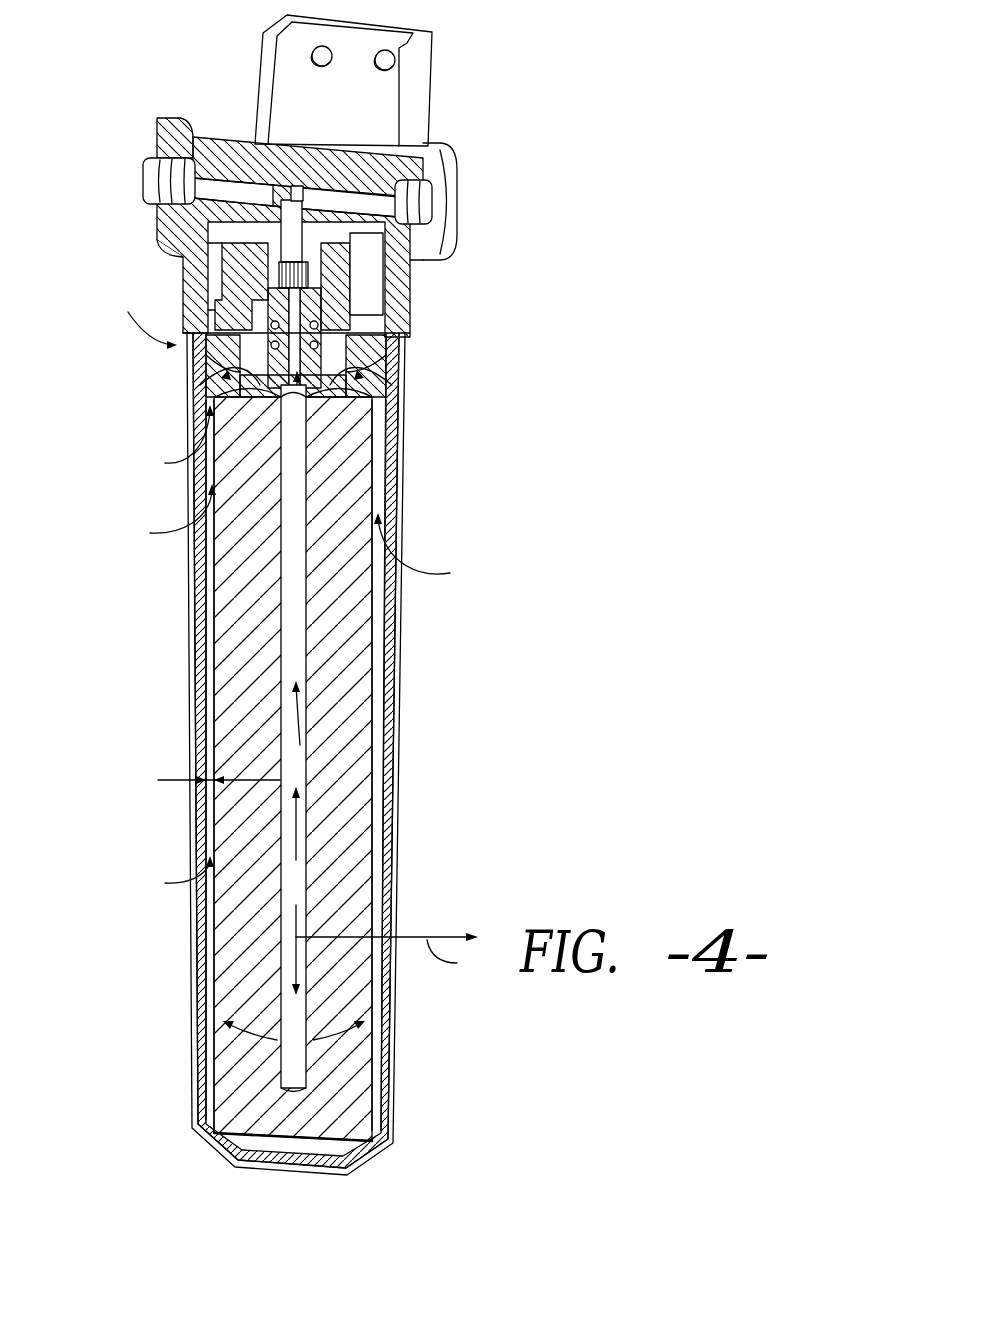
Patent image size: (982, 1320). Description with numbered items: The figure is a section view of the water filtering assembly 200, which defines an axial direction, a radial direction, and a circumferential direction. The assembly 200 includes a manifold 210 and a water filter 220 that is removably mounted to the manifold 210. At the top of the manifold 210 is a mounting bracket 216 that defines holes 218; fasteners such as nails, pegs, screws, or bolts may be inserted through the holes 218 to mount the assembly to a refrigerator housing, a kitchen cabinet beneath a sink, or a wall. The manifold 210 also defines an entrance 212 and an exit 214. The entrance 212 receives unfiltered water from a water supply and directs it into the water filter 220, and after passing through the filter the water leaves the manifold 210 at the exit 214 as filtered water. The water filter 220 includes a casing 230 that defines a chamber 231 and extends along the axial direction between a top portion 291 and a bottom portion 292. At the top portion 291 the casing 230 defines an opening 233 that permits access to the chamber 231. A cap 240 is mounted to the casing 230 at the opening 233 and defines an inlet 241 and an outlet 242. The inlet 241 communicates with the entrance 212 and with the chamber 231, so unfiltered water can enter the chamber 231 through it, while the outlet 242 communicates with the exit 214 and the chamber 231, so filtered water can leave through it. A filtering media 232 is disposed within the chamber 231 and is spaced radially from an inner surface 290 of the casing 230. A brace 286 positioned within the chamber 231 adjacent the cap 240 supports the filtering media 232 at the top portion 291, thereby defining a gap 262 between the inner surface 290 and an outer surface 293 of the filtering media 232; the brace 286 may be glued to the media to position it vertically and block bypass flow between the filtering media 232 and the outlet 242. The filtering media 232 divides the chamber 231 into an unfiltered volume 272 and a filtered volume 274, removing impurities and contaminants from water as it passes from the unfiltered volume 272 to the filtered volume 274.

The water filtering assembly 200 is at (395, 588).
The manifold 210 is at (411, 297).
The entrance 212 is at (210, 188).
The exit 214 is at (378, 201).
The mounting bracket 216 is at (374, 73).
The holes 218 is at (332, 42).
The water filter 220 is at (401, 858).
The casing 230 is at (195, 600).
The chamber 231 is at (164, 877).
The filtering media 232 is at (238, 925).
The opening 233 is at (422, 345).
The cap 240 is at (207, 352).
The inlet 241 is at (228, 372).
The outlet 242 is at (320, 445).
The gap 262 is at (170, 782).
The unfiltered volume 272 is at (298, 535).
The filtered volume 274 is at (308, 740).
The brace 286 is at (163, 442).
The inner surface 290 is at (212, 638).
The top portion 291 is at (142, 313).
The bottom portion 292 is at (402, 1172).
The outer surface 293 is at (215, 715).